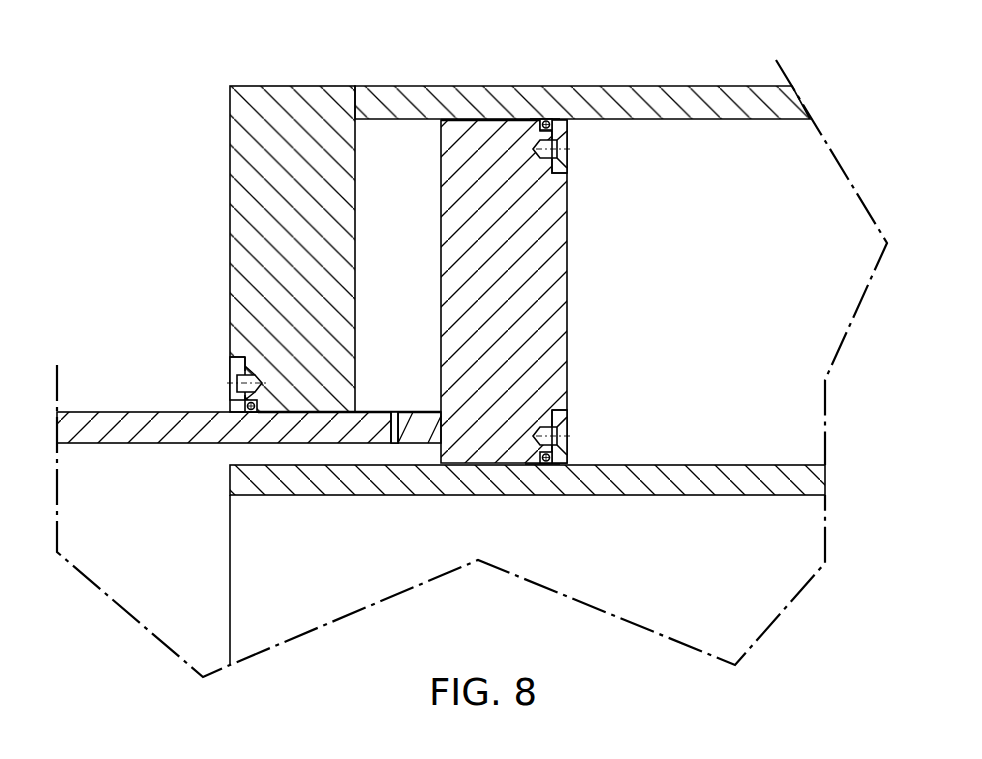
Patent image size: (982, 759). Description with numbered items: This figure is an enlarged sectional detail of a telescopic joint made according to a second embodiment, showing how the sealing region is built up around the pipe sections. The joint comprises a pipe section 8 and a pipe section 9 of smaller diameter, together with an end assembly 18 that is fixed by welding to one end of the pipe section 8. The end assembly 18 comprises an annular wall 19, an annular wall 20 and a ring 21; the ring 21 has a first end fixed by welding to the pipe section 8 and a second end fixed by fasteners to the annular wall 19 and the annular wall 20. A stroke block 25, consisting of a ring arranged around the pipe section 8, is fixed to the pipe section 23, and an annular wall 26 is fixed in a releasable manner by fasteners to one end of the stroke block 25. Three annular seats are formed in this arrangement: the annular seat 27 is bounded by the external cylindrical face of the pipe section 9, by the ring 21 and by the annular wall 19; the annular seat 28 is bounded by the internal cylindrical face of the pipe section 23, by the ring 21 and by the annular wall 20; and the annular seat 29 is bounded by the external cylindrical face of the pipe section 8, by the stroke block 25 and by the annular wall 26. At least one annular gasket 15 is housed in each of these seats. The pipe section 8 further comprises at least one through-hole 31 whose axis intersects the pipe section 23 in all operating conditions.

The pipe section 8 is at (143, 415).
The pipe section 9 is at (735, 480).
The annular gasket 15 is at (550, 120).
The end assembly 18 is at (592, 318).
The annular wall 19 is at (562, 460).
The annular wall 20 is at (563, 168).
The ring 21 is at (455, 217).
The pipe section 23 is at (718, 105).
The stroke block 25 is at (232, 165).
The annular wall 26 is at (233, 400).
The annular seat 27 is at (534, 465).
The annular seat 28 is at (540, 116).
The annular seat 29 is at (259, 418).
The through-hole 31 is at (393, 445).